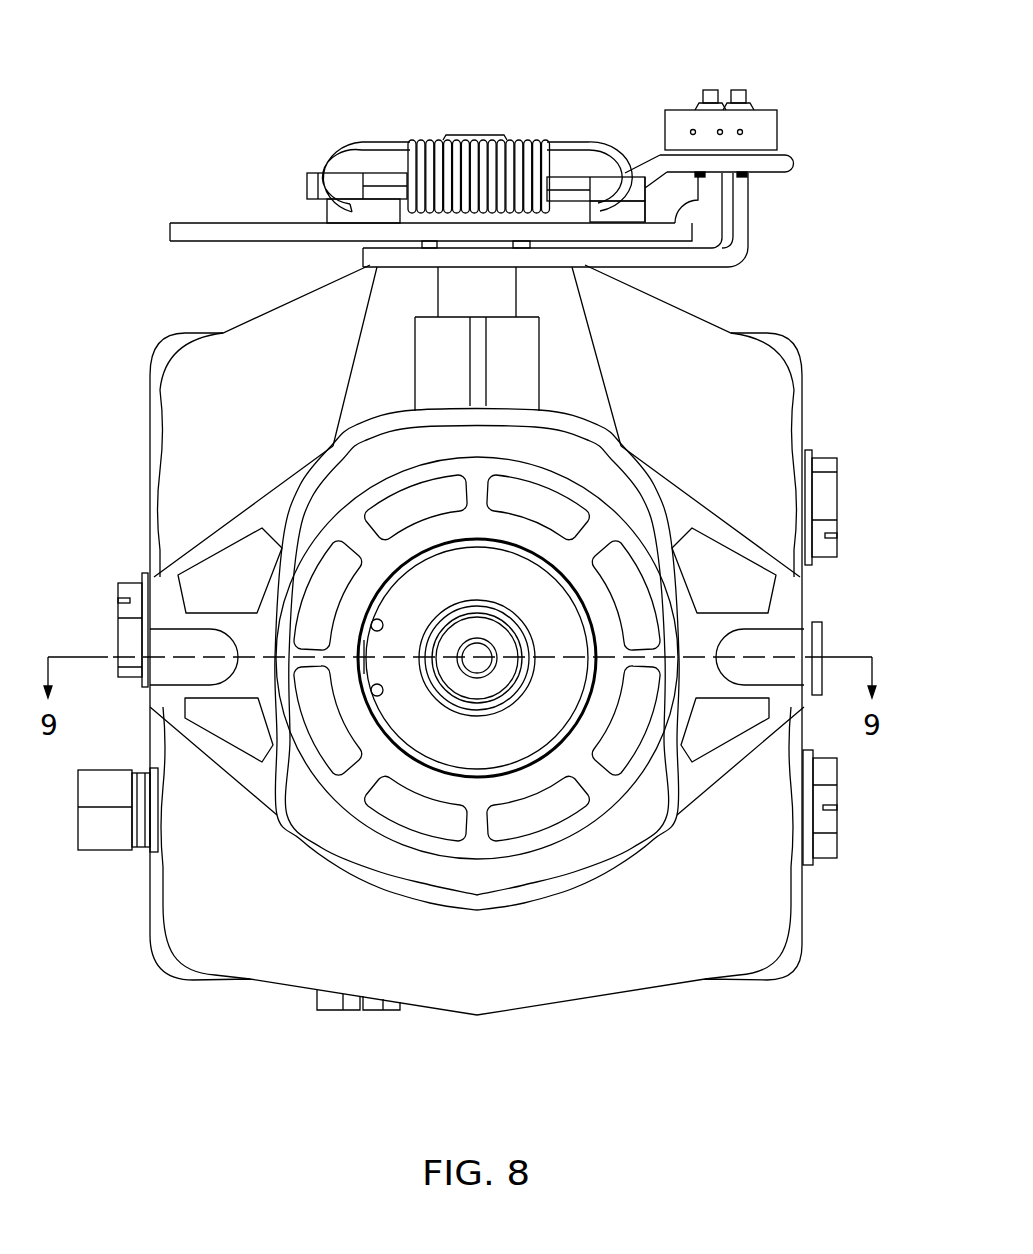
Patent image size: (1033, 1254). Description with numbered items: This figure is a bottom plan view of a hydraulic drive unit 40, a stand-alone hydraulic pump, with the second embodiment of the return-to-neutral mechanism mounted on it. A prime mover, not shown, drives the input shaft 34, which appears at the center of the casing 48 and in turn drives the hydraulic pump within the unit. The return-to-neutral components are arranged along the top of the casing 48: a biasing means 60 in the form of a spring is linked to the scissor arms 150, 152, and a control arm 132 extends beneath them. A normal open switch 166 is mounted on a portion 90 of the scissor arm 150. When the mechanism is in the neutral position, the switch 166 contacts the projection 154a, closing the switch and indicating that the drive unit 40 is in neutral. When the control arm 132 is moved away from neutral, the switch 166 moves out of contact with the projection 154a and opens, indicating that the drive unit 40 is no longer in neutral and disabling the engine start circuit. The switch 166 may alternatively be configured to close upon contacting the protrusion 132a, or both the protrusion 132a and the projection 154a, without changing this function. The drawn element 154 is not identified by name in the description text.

The hydraulic drive unit 40 is at (181, 82).
The casing 48 is at (257, 420).
The input shaft 34 is at (457, 677).
The biasing means 60 is at (437, 142).
The scissor arm 152 is at (607, 168).
The scissor arm 150 is at (650, 167).
The portion of scissor arm 90 is at (785, 162).
The conduit 154 is at (714, 268).
The projection 154a is at (740, 88).
The control arm 132 is at (247, 222).
The protrusion 132a is at (712, 88).
The normal open switch 166 is at (777, 122).